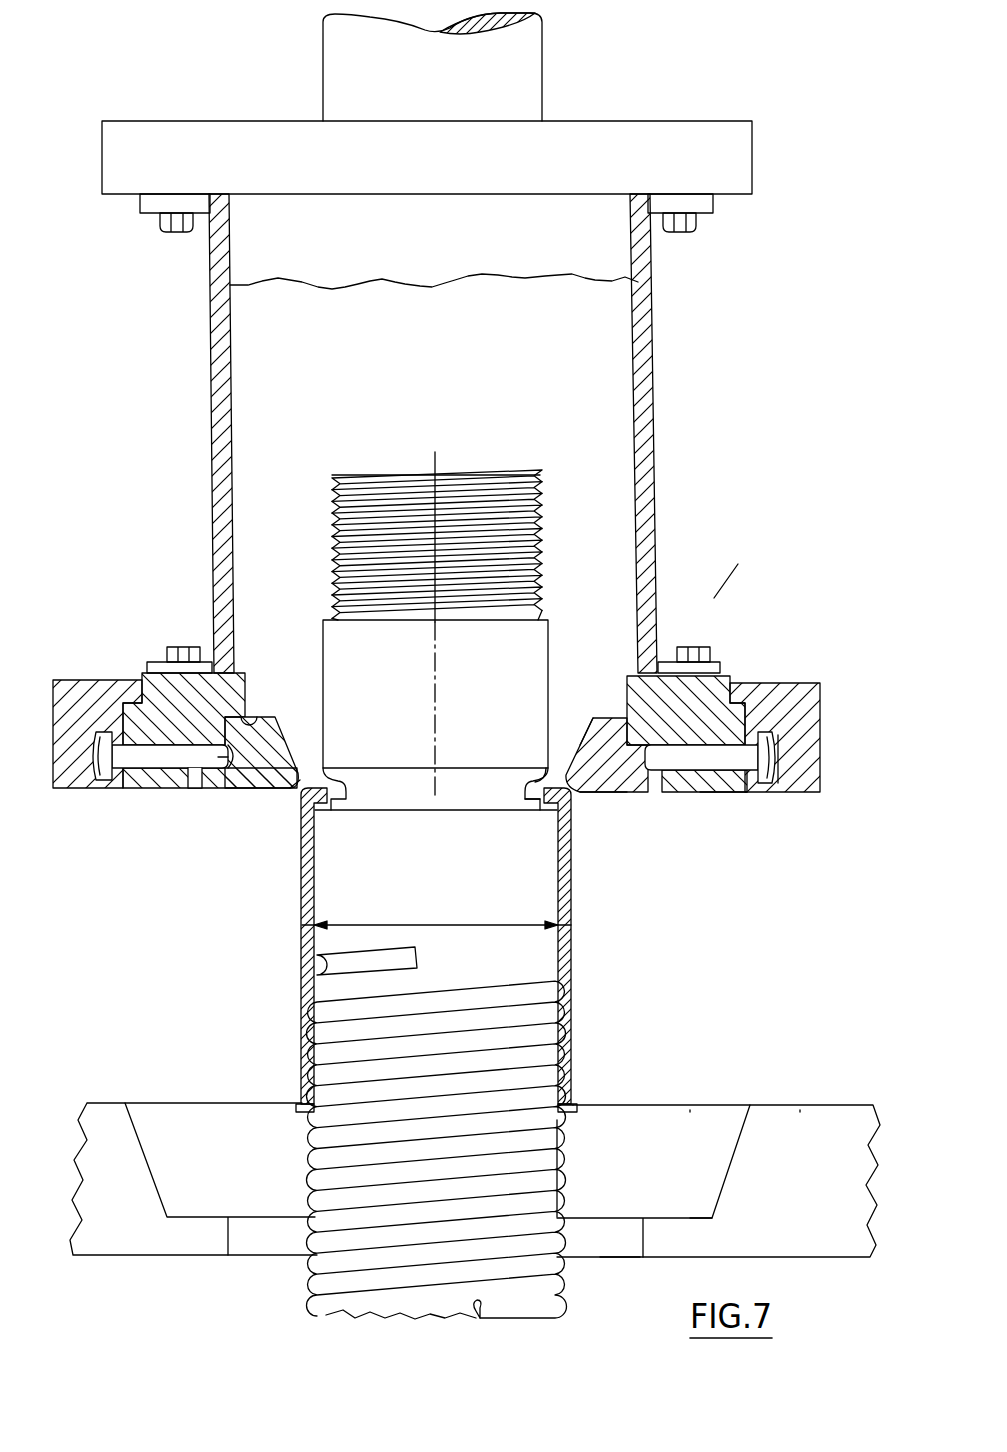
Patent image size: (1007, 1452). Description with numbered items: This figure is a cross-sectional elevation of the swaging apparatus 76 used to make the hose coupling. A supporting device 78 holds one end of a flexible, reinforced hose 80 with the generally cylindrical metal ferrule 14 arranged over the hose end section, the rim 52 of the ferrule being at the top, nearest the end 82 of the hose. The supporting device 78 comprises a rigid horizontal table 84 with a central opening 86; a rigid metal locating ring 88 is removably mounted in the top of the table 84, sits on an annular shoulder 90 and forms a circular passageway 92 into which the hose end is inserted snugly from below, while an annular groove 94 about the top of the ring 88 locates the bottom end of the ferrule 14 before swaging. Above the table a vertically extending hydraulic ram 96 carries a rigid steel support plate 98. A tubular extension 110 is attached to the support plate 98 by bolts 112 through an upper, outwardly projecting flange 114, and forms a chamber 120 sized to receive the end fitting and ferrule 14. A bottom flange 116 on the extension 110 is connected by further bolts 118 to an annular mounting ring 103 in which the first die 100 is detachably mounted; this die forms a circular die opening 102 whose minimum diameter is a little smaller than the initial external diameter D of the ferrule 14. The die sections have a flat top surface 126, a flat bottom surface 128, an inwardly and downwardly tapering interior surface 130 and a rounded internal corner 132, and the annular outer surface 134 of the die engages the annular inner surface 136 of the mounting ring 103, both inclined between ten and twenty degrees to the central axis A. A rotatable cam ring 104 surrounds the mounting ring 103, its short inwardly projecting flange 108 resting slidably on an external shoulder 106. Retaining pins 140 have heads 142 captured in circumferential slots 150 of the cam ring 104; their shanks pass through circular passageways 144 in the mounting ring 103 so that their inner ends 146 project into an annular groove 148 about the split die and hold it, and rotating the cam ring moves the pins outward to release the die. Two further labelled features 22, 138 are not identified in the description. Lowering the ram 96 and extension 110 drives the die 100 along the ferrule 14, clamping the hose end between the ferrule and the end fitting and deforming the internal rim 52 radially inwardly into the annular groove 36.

The hydraulic ram 96 is at (542, 88).
The support plate 98 is at (689, 132).
The upper outwardly projecting flange 114 is at (714, 200).
The bolts 112 is at (680, 232).
The tubular extension 110 is at (653, 402).
The chamber 120 is at (558, 392).
The apparatus 76 is at (708, 608).
The end of the hose 82 is at (393, 813).
The rim 52 is at (543, 813).
The annular groove 36 is at (535, 778).
The die opening 102 is at (556, 767).
The ferrule 14 is at (574, 957).
The coil spring 22 is at (548, 1034).
The hose 80 is at (548, 1306).
The supporting device 78 is at (613, 1103).
The locating ring 88 is at (688, 1118).
The support table 84 is at (800, 1118).
The annular groove 94 is at (568, 1108).
The circular passageway 92 is at (557, 1182).
The annular shoulder 90 is at (684, 1222).
The central opening 86 is at (612, 1247).
The inwardly projecting flange 108 is at (132, 690).
The bottom flange 116 is at (156, 661).
The bolts 118 is at (186, 645).
The notch 138 is at (249, 722).
The tapering interior surface 130 is at (300, 745).
The retaining pins 140 is at (177, 762).
The circular passageway 144 is at (134, 786).
The annular outer surface 134 is at (197, 772).
The inner ends 146 is at (224, 790).
The annular groove 148 is at (238, 778).
The rounded internal corner 132 is at (297, 790).
The cam ring 104 is at (790, 688).
The external shoulder 106 is at (738, 704).
The first die 100 is at (630, 792).
The flat top surface 126 is at (610, 716).
The flat bottom surface 128 is at (611, 795).
The annular inner surface 136 is at (674, 781).
The heads 142 is at (769, 776).
The slots 150 is at (782, 778).
The mounting ring 103 is at (723, 792).
The central axis A is at (437, 701).
The initial first external diameter D is at (455, 925).